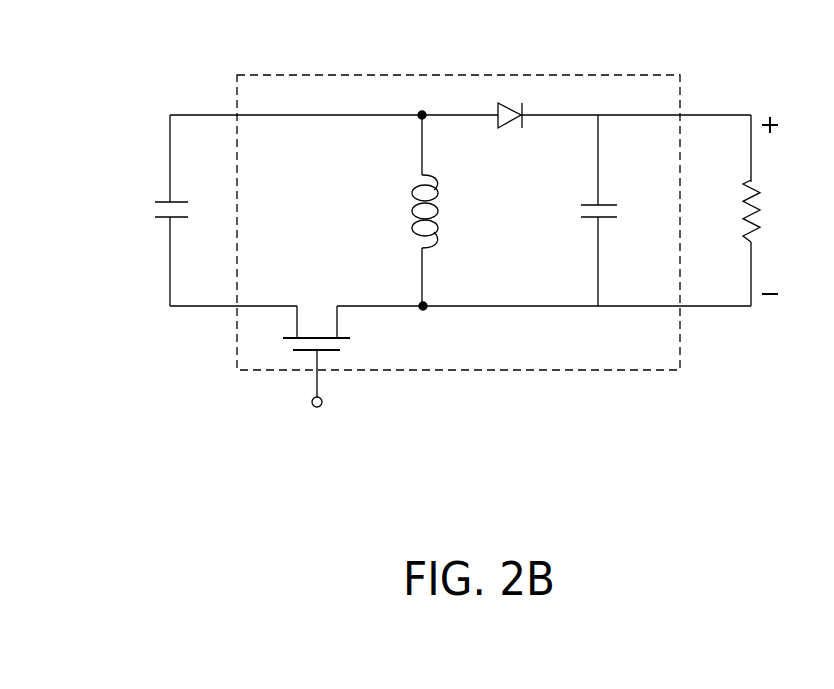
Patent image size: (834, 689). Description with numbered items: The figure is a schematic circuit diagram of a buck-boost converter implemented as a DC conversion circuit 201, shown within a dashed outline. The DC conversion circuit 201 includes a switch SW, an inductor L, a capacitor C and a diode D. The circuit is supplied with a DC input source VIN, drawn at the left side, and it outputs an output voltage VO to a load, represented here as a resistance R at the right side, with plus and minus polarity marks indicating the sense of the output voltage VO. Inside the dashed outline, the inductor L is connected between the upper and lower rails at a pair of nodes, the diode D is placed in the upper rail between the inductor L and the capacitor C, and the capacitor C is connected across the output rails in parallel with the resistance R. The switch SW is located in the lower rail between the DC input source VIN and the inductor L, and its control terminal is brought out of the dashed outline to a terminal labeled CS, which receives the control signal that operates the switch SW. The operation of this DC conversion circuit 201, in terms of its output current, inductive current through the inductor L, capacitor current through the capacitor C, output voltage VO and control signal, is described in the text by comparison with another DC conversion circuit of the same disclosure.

The DC conversion circuit 201 is at (459, 73).
The DC input source VIN is at (149, 209).
The inductor L is at (437, 210).
The diode D is at (510, 128).
The capacitor C is at (609, 210).
The resistance R is at (739, 211).
The output voltage VO is at (782, 205).
The switch SW is at (316, 336).
The control signal input CS is at (315, 416).